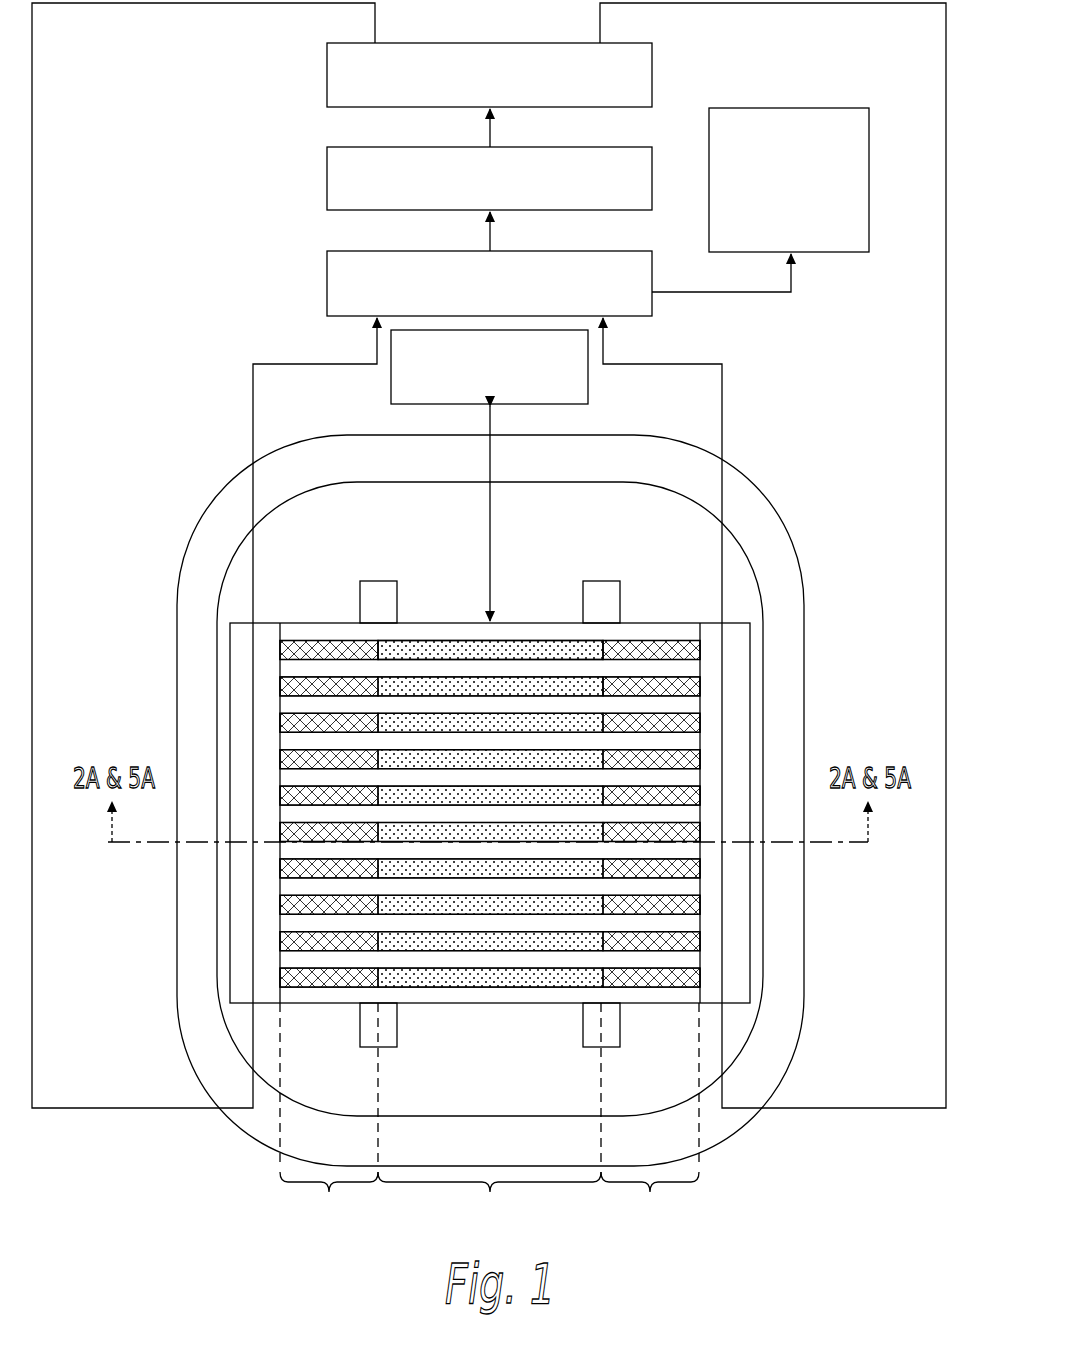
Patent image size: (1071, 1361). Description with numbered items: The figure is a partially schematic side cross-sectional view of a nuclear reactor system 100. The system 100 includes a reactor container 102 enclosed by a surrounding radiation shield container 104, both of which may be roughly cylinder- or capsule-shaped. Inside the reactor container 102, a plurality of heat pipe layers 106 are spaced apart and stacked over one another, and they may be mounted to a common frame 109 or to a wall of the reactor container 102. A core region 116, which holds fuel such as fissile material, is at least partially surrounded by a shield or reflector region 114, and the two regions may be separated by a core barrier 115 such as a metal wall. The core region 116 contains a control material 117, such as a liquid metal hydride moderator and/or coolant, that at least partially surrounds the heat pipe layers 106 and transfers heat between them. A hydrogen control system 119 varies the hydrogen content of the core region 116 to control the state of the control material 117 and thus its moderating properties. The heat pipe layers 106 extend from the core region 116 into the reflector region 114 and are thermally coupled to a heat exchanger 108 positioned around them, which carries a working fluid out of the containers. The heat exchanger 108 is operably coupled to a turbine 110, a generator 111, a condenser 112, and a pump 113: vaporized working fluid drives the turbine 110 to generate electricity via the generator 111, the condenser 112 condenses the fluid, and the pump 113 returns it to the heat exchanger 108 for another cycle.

The nuclear reactor system 100 is at (178, 160).
The reactor container 102 is at (757, 592).
The radiation shield container 104 is at (769, 510).
The heat pipe layers 106 is at (700, 632).
The heat exchanger 108 is at (240, 648).
The common frame 109 is at (374, 592).
The turbine 110 is at (327, 281).
The generator 111 is at (869, 178).
The condenser 112 is at (327, 177).
The pump 113 is at (327, 73).
The reflector region 114 is at (489, 1118).
The core barrier 115 is at (601, 690).
The core region 116 is at (489, 1201).
The control material 117 is at (430, 648).
The hydrogen control system 119 is at (391, 377).